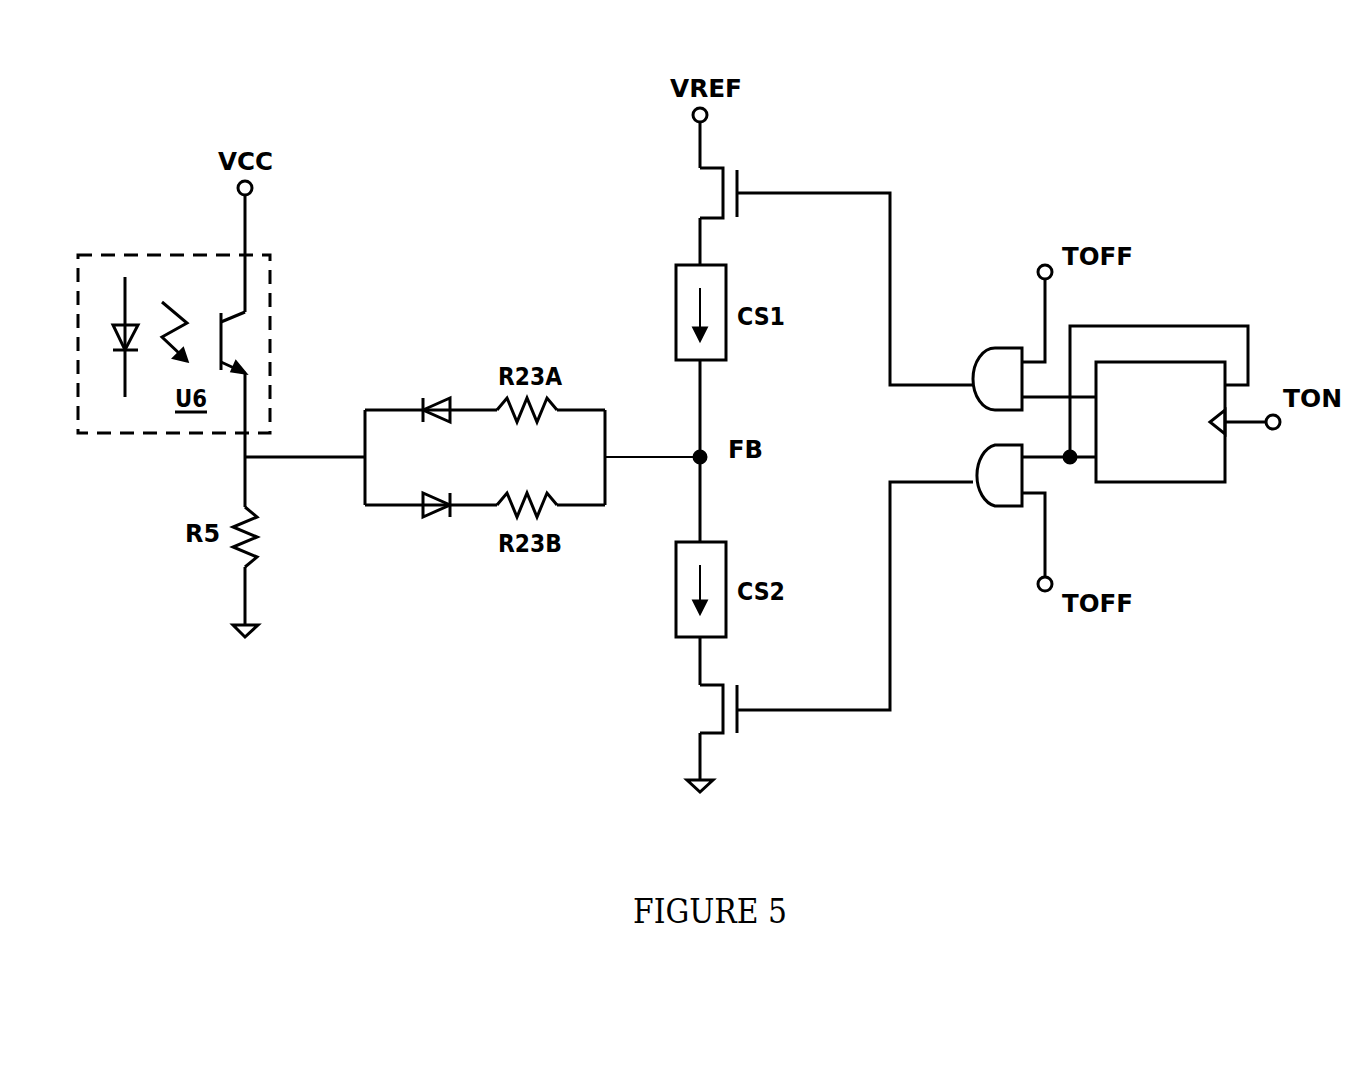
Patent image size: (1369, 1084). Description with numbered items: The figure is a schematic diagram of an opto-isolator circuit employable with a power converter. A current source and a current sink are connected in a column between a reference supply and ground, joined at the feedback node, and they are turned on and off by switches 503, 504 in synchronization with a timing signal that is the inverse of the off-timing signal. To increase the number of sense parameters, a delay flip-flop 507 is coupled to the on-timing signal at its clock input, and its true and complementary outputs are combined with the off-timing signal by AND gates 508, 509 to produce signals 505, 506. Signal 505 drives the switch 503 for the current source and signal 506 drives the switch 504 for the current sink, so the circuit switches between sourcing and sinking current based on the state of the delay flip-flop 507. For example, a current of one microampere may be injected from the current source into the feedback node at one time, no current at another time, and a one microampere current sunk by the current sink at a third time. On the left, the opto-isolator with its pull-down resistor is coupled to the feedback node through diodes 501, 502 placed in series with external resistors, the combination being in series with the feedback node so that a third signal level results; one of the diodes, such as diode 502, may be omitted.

The diode 501 is at (434, 392).
The diode 502 is at (434, 525).
The switch 503 is at (689, 193).
The switch 504 is at (689, 709).
The signal 505 is at (855, 270).
The signal 506 is at (855, 616).
The delay flip-flop 507 is at (1210, 473).
The AND gate 508 is at (1017, 393).
The AND gate 509 is at (1017, 488).